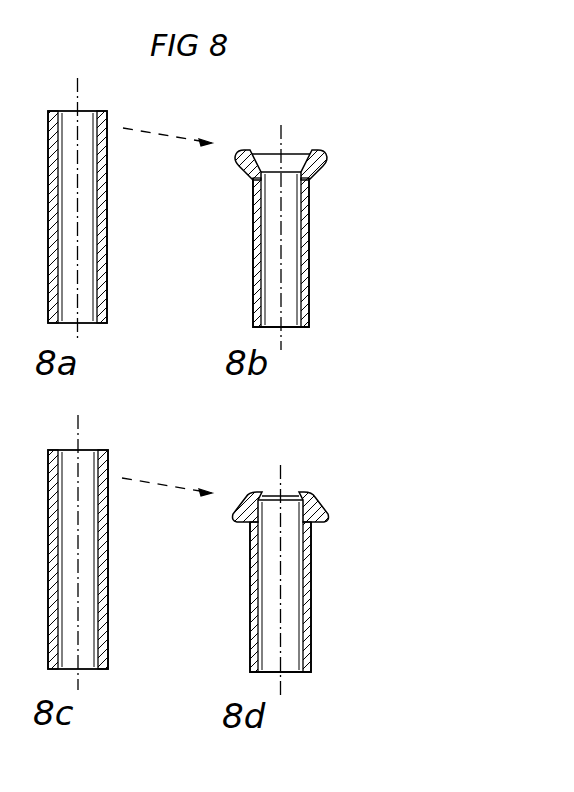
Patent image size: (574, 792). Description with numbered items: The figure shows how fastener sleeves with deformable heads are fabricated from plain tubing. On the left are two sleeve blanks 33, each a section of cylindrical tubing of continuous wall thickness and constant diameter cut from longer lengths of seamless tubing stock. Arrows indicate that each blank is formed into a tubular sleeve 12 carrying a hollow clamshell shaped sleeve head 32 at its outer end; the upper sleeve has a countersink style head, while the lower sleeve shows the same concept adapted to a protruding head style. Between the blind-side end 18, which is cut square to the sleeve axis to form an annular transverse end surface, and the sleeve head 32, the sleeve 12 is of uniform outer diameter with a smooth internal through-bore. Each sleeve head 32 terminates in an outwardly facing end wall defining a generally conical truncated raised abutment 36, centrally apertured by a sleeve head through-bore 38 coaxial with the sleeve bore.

In FIG. 8b, the tubular sleeve 12 is at (250, 243).
In FIG. 8d, the tubular sleeve 12 is at (250, 600).
In FIG. 8b, the blind-side end 18 is at (304, 328).
In FIG. 8d, the blind-side end 18 is at (306, 672).
In FIG. 8b, the sleeve head 32 is at (317, 170).
In FIG. 8d, the sleeve head 32 is at (320, 512).
In FIG. 8a, the sleeve blank 33 is at (107, 233).
In FIG. 8c, the sleeve blank 33 is at (108, 573).
In FIG. 8b, the raised abutment 36 is at (312, 153).
In FIG. 8d, the raised abutment 36 is at (315, 502).
In FIG. 8b, the sleeve head through-bore 38 is at (298, 150).
In FIG. 8d, the sleeve head through-bore 38 is at (290, 497).